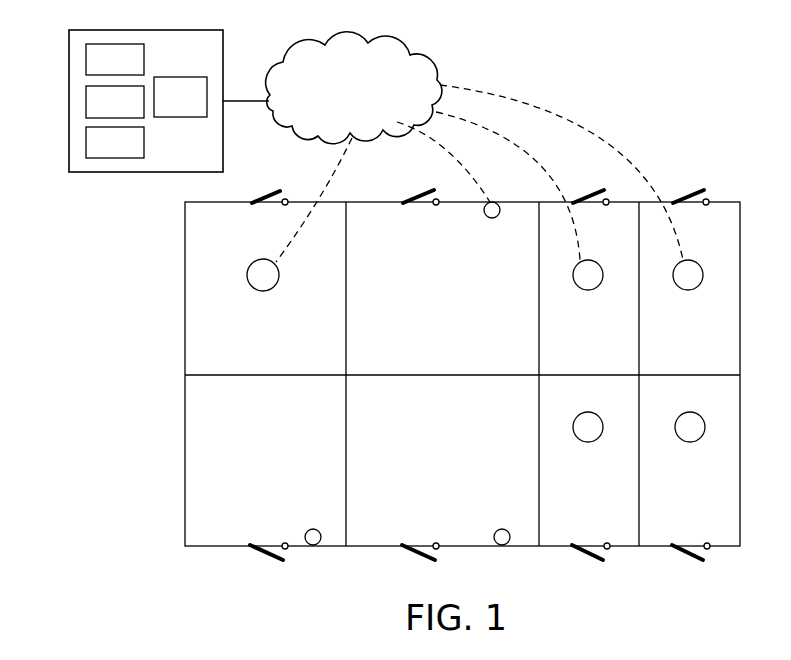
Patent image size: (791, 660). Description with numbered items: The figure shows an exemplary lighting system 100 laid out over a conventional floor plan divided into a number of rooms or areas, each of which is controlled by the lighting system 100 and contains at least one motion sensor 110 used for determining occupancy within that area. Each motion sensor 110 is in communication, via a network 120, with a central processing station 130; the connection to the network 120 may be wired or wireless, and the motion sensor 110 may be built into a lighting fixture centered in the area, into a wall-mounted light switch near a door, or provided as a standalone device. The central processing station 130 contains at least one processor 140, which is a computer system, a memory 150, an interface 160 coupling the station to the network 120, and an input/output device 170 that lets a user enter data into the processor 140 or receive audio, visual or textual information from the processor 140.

The lighting system 100 is at (722, 56).
The motion sensor 110 is at (259, 291).
The network 120 is at (395, 46).
The central processing station 130 is at (95, 172).
The processor 140 is at (86, 61).
The memory 150 is at (86, 101).
The interface 160 is at (190, 117).
The input/output device 170 is at (86, 144).